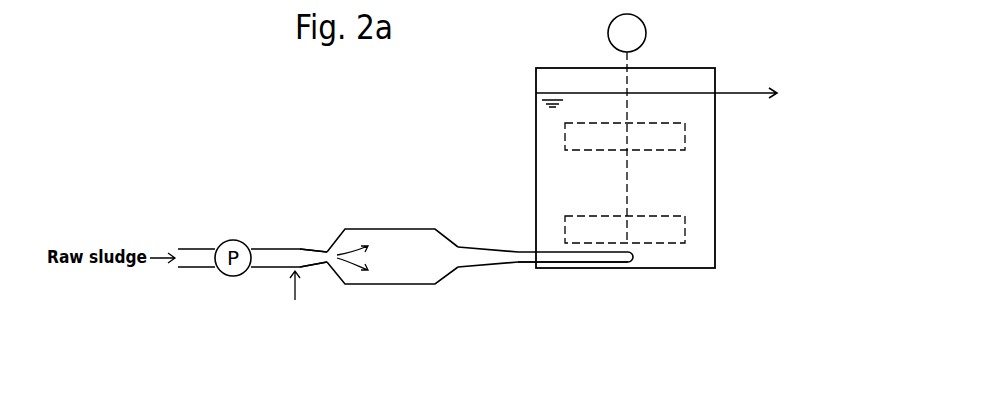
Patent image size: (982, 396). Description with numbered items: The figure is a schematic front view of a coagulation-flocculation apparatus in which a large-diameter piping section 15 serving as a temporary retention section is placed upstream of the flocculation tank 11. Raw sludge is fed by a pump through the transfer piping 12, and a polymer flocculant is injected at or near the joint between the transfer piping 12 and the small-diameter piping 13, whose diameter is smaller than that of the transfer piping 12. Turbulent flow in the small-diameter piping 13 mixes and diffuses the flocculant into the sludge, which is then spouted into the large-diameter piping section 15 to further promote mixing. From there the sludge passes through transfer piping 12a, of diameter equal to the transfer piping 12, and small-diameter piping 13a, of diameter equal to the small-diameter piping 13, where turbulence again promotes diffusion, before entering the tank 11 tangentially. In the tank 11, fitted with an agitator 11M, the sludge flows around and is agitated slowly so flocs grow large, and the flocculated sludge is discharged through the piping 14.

The flocculation tank 11 is at (715, 197).
The agitator 11M is at (646, 27).
The transfer piping 12 is at (263, 250).
The transfer piping 12a is at (483, 247).
The small-diameter piping 13 is at (311, 251).
The small-diameter piping 13a is at (515, 264).
The piping 14 is at (745, 92).
The large-diameter piping section 15 is at (429, 285).